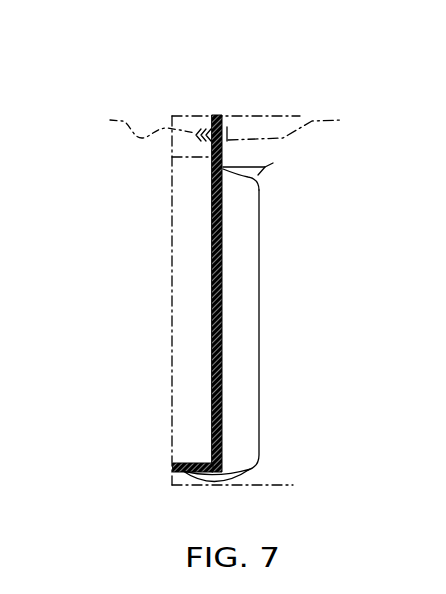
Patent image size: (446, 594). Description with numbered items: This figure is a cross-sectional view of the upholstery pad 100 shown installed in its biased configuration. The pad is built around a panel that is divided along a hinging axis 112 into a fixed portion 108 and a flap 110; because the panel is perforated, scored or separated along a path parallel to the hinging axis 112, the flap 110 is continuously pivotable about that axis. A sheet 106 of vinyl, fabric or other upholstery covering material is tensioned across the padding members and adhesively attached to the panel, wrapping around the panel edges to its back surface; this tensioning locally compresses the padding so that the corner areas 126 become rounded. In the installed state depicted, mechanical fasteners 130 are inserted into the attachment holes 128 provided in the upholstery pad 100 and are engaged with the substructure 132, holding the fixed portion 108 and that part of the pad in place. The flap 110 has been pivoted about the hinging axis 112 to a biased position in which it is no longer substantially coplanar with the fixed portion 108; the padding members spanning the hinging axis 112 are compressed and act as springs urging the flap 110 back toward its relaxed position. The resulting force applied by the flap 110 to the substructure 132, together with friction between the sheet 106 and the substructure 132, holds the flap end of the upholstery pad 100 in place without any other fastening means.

The upholstery pad 100 is at (108, 85).
The sheet 106 is at (259, 313).
The fixed portion 108 is at (212, 262).
The flap 110 is at (205, 463).
The hinging axis 112 is at (250, 468).
The corner areas 126 is at (273, 163).
The attachment holes 128 is at (224, 131).
The mechanical fasteners 130 is at (311, 126).
The substructure 132 is at (135, 125).